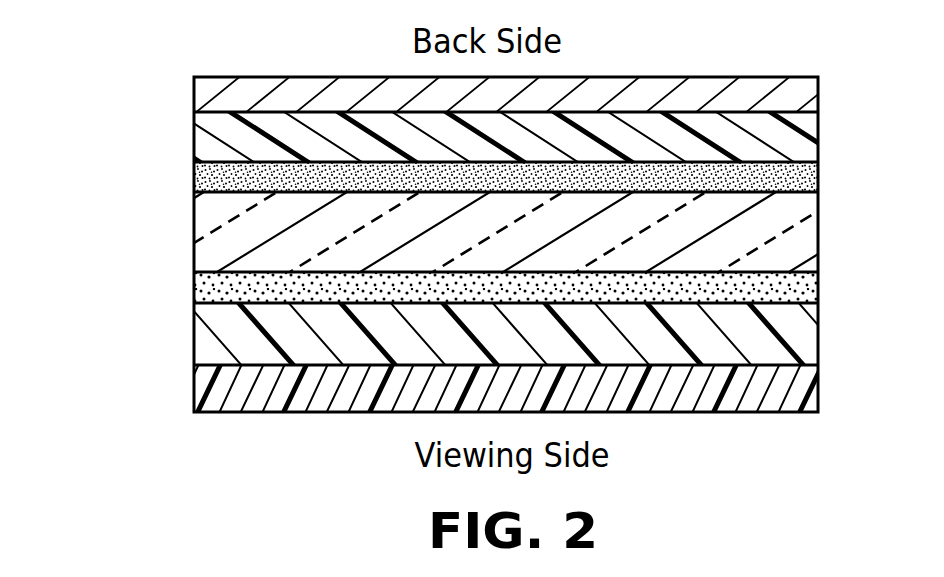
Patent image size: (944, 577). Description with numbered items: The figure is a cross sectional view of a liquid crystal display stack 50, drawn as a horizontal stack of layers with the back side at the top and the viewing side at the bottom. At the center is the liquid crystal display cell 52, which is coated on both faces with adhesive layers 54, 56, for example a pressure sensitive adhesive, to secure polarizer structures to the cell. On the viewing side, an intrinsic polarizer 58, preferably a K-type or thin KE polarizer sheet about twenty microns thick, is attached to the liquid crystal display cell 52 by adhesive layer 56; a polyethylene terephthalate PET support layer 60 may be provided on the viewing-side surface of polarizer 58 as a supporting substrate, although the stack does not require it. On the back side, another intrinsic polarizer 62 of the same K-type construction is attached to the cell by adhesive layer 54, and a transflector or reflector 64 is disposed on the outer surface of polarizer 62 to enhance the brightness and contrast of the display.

The liquid crystal display stack 50 is at (136, 262).
The liquid crystal display cell 52 is at (815, 233).
The adhesive layer 54 is at (810, 178).
The adhesive layer 56 is at (813, 283).
The intrinsic polarizer 58 is at (810, 335).
The PET support layer 60 is at (812, 395).
The intrinsic polarizer 62 is at (807, 142).
The transflector or reflector 64 is at (807, 93).